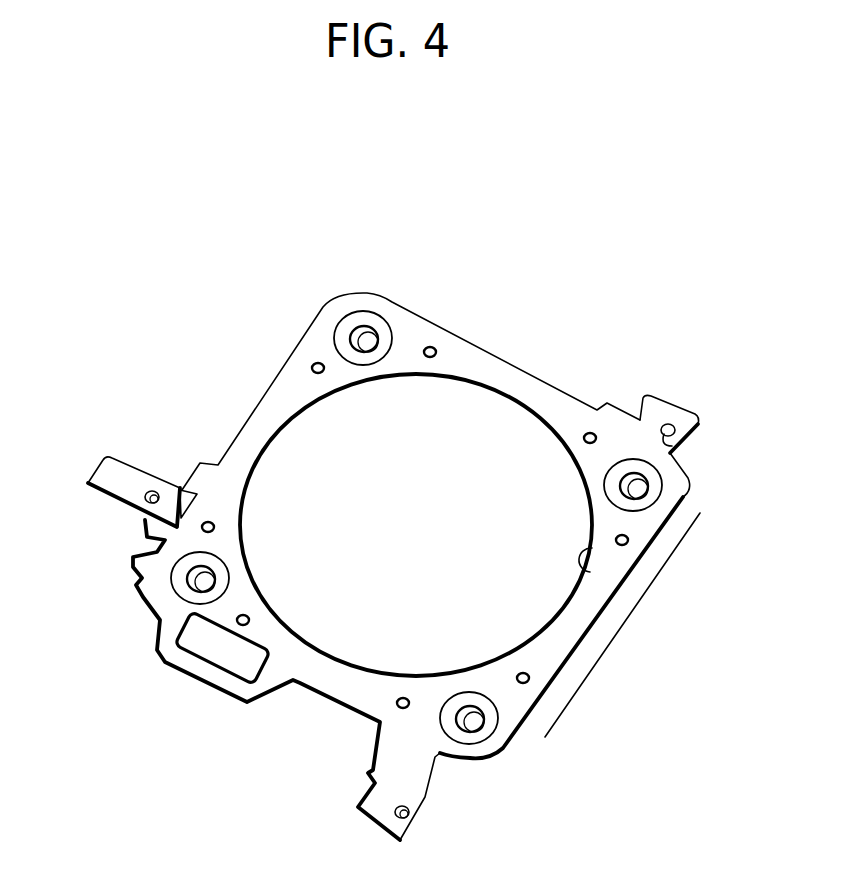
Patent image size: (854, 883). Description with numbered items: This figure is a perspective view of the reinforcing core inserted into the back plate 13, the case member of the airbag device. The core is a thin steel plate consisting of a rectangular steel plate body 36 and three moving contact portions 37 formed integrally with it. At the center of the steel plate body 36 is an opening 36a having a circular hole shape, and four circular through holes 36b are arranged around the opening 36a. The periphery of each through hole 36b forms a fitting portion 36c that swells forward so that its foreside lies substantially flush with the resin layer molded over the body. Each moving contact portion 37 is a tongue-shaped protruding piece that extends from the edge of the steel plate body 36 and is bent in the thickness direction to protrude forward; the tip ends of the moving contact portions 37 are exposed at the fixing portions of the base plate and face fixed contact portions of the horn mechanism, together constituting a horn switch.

The back plate 13 is at (407, 535).
The steel plate body 36 is at (513, 368).
The opening 36a is at (583, 570).
The through hole 36b is at (375, 340).
The fitting portion 36c is at (348, 327).
The moving contact portion 37 is at (152, 490).